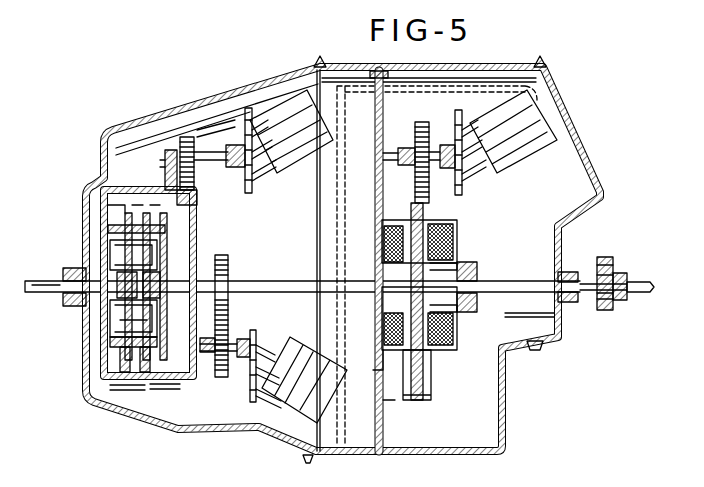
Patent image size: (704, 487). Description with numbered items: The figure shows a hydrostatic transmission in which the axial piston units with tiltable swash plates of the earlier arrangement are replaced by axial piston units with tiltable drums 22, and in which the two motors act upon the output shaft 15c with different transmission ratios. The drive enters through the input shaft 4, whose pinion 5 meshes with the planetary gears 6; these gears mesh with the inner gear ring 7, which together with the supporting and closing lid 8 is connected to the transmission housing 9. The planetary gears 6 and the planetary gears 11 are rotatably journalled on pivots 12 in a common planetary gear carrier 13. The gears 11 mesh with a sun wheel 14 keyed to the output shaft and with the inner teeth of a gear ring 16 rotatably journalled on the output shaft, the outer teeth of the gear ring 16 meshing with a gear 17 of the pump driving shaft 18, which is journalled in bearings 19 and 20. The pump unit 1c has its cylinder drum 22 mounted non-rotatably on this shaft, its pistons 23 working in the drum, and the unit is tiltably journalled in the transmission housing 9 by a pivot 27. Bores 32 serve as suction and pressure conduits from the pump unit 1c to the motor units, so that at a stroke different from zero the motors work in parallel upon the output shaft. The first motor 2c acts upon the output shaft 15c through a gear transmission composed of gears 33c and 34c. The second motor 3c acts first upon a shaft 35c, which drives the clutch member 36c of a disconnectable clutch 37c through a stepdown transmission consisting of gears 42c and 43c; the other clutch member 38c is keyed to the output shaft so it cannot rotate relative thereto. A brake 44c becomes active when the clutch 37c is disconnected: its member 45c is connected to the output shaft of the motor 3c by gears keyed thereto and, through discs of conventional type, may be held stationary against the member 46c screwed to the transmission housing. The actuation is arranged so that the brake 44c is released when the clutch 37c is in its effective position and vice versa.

The pump unit 1c is at (392, 223).
The first motor 2c is at (279, 404).
The second motor 3c is at (557, 124).
The input shaft 4 is at (34, 281).
The pinion 5 is at (127, 303).
The planetary gears 6 is at (127, 246).
The inner gear ring 7 is at (127, 370).
The supporting and closing lid 8 is at (112, 296).
The transmission housing 9 is at (125, 123).
The planetary gears 11 is at (160, 249).
The pivots 12 is at (110, 226).
The planetary gear carrier 13 is at (108, 352).
The sun wheel 14 is at (171, 335).
The output shaft 15c is at (259, 282).
The gear ring 16 is at (148, 380).
The gear 17 is at (186, 137).
The pump driving shaft 18 is at (204, 162).
The bearing 19 is at (166, 164).
The bearing 20 is at (222, 157).
The cylinder drum 22 is at (283, 97).
The pistons 23 is at (258, 172).
The pivot 27 is at (272, 153).
The bores 32 is at (468, 87).
The gear 33c is at (218, 377).
The gear 34c is at (226, 257).
The shaft 35c is at (405, 150).
The clutch member 36c is at (442, 350).
The disconnectable clutch 37c is at (457, 247).
The clutch member 38c is at (452, 322).
The gear 42c is at (431, 140).
The gear 43c is at (420, 392).
The brake 44c is at (385, 232).
The brake member 45c is at (378, 365).
The brake member 46c is at (392, 314).